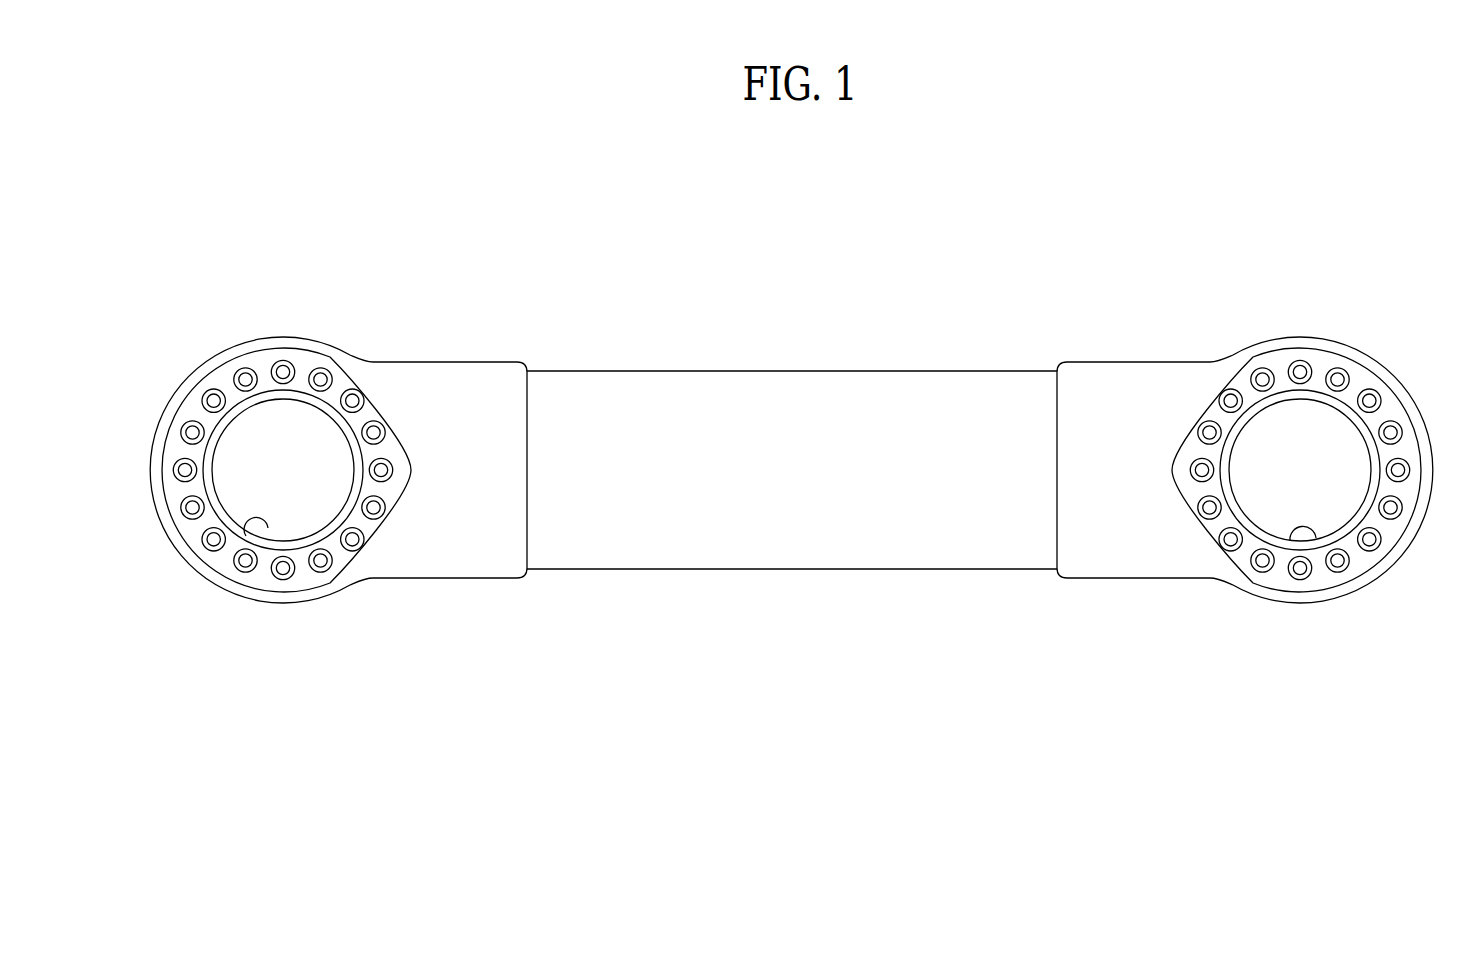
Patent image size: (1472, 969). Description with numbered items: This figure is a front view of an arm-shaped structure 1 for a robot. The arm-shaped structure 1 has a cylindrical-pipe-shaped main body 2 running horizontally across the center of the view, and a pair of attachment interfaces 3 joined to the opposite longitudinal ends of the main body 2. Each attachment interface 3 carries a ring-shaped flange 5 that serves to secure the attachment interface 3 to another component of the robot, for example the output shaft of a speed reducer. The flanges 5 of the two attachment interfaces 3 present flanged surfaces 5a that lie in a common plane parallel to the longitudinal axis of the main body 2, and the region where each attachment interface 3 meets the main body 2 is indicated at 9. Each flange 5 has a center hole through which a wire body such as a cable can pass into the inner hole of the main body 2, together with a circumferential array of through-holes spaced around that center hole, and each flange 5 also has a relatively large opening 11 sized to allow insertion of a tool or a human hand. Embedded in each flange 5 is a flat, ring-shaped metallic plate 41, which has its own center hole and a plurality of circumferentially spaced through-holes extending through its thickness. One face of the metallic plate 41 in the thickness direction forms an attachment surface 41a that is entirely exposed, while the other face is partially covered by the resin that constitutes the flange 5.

The arm-shaped structure 1 is at (638, 250).
The main body 2 is at (763, 354).
The attachment interface 3 is at (158, 251).
The flange 5 is at (217, 356).
The flanged surface 5a is at (354, 469).
The connecting portion 9 is at (464, 400).
The opening 11 is at (268, 528).
The metallic plate 41 is at (317, 597).
The attachment surface 41a is at (225, 558).